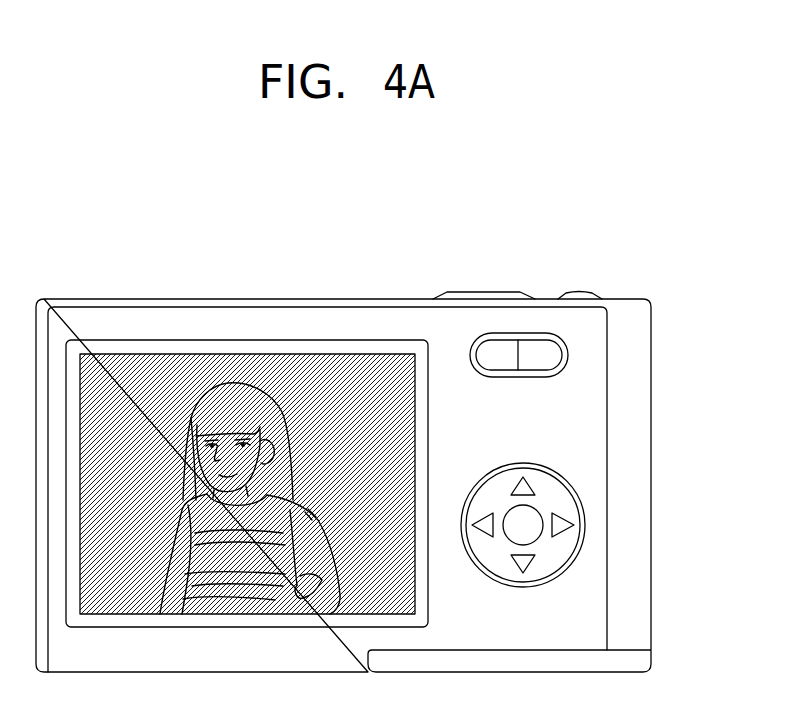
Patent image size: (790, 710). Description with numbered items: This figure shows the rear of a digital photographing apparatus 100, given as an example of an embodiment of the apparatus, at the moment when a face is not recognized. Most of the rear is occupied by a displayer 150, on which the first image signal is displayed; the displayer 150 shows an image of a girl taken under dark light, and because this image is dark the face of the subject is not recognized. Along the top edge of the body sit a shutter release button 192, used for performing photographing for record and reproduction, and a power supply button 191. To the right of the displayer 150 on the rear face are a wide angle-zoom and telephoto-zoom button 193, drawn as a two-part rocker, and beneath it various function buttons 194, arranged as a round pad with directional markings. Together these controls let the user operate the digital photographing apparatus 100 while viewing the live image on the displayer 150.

The digital photographing apparatus 100 is at (584, 190).
The displayer 150 is at (246, 340).
The power supply button 191 is at (577, 292).
The shutter release button 192 is at (482, 292).
The wide angle-zoom and telephoto-zoom button 193 is at (568, 355).
The function buttons 194 is at (585, 526).